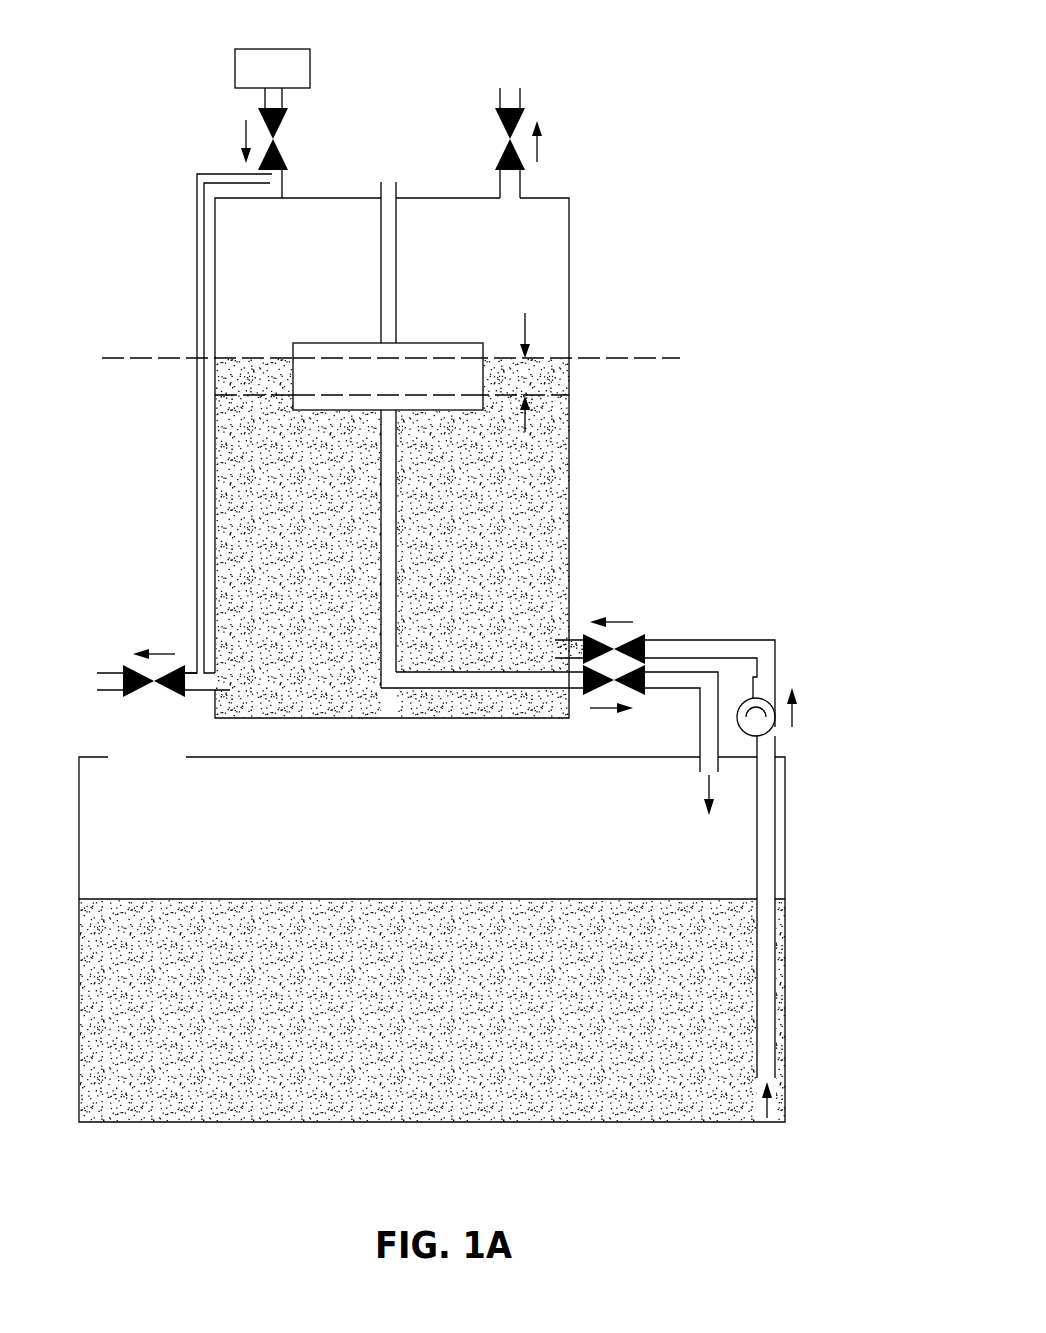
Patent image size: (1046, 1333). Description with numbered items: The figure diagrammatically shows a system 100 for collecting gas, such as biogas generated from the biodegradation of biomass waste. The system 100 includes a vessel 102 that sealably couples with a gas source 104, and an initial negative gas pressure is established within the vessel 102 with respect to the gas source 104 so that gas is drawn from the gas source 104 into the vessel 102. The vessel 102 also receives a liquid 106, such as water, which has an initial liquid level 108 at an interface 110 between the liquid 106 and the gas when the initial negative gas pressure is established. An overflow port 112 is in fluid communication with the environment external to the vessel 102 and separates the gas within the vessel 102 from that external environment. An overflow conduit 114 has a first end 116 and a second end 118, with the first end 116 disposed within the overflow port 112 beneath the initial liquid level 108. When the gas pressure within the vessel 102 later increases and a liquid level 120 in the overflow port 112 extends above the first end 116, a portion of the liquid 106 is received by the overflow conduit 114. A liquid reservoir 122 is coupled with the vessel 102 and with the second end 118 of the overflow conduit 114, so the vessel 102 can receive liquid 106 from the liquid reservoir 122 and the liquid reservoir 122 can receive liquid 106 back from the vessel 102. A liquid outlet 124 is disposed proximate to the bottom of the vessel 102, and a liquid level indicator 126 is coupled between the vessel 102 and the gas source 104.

The system 100 is at (731, 103).
The vessel 102 is at (568, 472).
The gas source 104 is at (274, 48).
The liquid 106 is at (572, 565).
The initial liquid level 108 is at (668, 357).
The interface 110 is at (230, 357).
The overflow port 112 is at (293, 378).
The overflow conduit 114 is at (522, 672).
The first end 116 is at (388, 402).
The second end 118 is at (708, 765).
The liquid level 120 is at (347, 400).
The liquid reservoir 122 is at (745, 1125).
The liquid outlet 124 is at (97, 680).
The liquid level indicator 126 is at (196, 615).